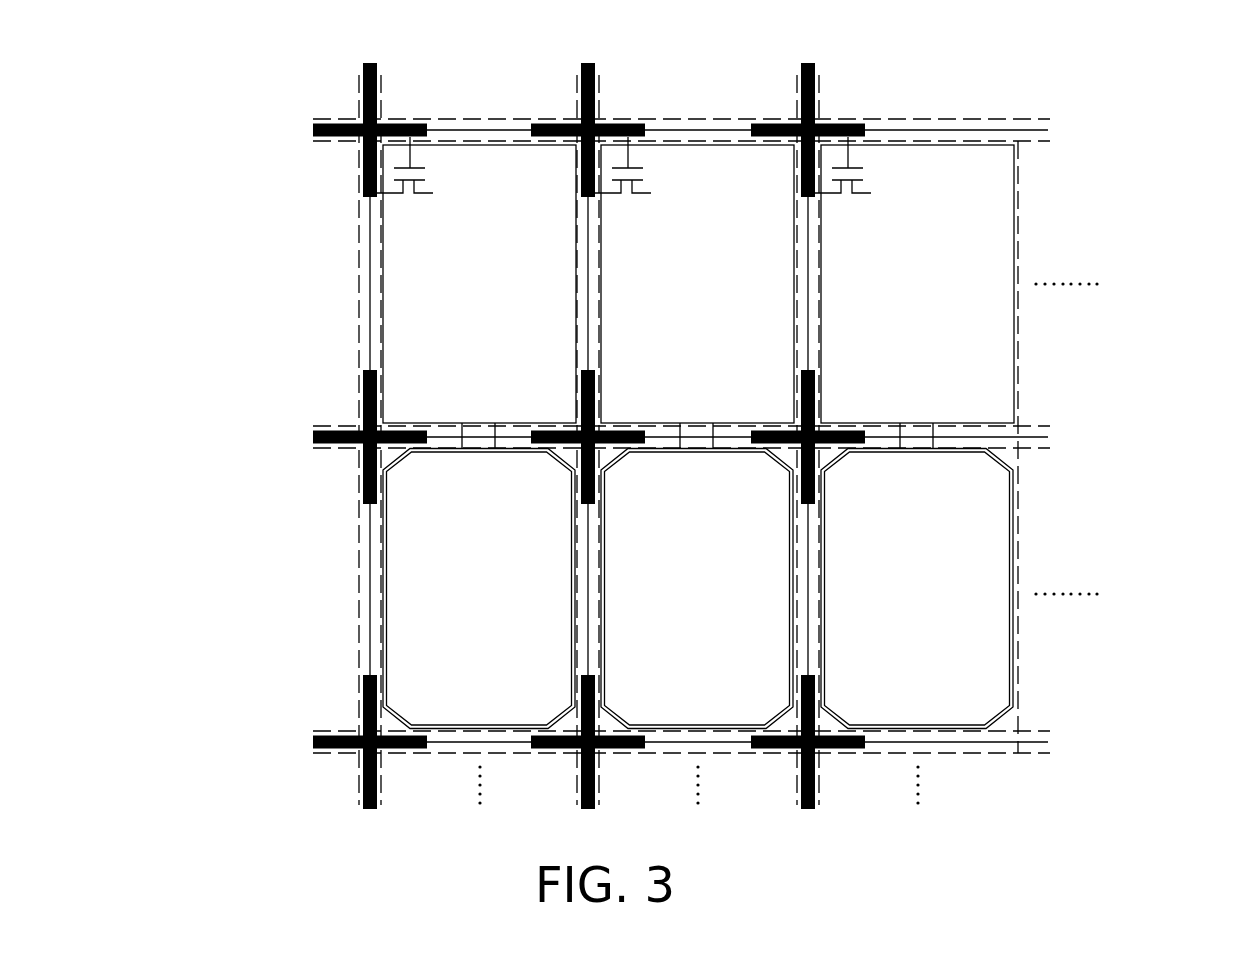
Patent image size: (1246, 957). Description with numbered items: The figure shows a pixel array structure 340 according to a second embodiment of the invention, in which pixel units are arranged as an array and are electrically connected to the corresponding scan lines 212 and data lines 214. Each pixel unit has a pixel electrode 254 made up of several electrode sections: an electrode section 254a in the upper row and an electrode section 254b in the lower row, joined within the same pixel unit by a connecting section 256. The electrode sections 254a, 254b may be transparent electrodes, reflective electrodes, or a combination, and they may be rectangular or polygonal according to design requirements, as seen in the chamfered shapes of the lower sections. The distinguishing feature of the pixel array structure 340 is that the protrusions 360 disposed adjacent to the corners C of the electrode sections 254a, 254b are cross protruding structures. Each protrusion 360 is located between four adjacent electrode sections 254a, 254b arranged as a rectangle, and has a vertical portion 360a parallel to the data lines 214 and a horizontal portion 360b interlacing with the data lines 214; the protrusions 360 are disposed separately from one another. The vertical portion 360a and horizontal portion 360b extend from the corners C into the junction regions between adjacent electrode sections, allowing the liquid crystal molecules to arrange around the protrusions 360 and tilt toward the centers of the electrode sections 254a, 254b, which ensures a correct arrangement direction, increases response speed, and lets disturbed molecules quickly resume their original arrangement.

The pixel array structure 340 is at (1210, 791).
The scan lines 212 is at (690, 131).
The data lines 214 is at (588, 270).
The protrusions 360 is at (509, 420).
The vertical portion 360a is at (363, 66).
The horizontal portion 360b is at (327, 124).
The pixel electrode 254 is at (602, 433).
The electrode section 254a is at (413, 248).
The connecting section 256 is at (477, 423).
The electrode section 254b is at (444, 457).
The corners C is at (408, 702).